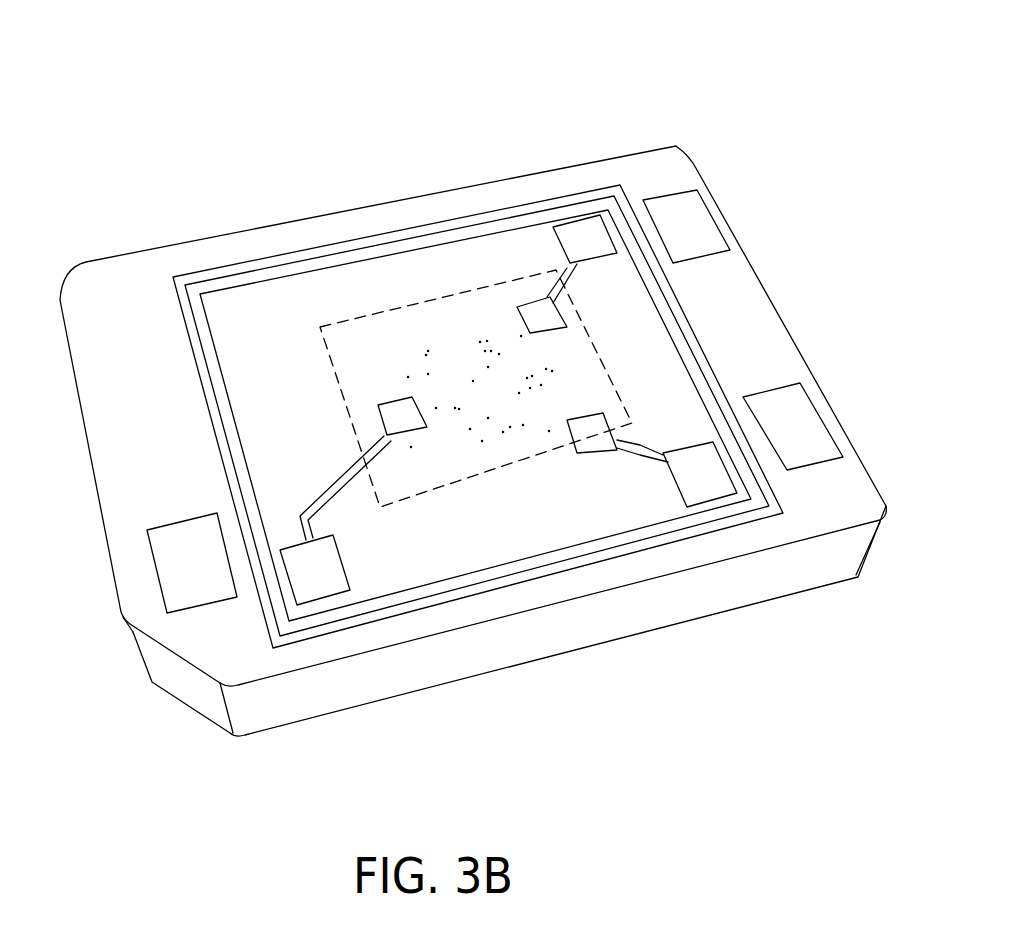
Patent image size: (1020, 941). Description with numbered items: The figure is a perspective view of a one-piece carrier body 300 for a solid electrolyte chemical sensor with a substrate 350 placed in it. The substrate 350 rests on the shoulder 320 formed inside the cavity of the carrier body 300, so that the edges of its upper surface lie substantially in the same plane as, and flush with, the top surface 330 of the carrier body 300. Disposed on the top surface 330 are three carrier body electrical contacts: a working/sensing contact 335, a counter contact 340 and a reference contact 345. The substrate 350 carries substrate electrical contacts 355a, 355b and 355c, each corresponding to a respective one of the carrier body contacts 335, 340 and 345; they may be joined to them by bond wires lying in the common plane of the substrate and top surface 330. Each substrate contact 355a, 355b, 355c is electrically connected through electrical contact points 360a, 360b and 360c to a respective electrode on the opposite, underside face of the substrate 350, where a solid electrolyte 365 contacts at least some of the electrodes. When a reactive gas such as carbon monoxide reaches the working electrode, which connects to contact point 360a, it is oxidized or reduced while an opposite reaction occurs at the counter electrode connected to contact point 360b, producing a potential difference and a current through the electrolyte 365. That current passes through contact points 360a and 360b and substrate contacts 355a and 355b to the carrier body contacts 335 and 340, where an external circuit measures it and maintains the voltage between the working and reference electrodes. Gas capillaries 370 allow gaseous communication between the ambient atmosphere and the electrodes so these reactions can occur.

The carrier body 300 is at (473, 429).
The shoulder 320 is at (214, 420).
The top surface 330 is at (149, 272).
The working/sensing electrical contact 335 is at (193, 603).
The counter electrical contact 340 is at (805, 392).
The reference electrical contact 345 is at (707, 207).
The substrate 350 is at (291, 330).
The substrate electrical contact 355a is at (323, 597).
The substrate electrical contact 355b is at (717, 497).
The substrate electrical contact 355c is at (583, 217).
The electrical contact point 360a is at (380, 418).
The electrical contact point 360b is at (568, 437).
The electrical contact point 360c is at (550, 331).
The solid electrolyte 365 is at (477, 484).
The gas capillaries 370 is at (474, 362).